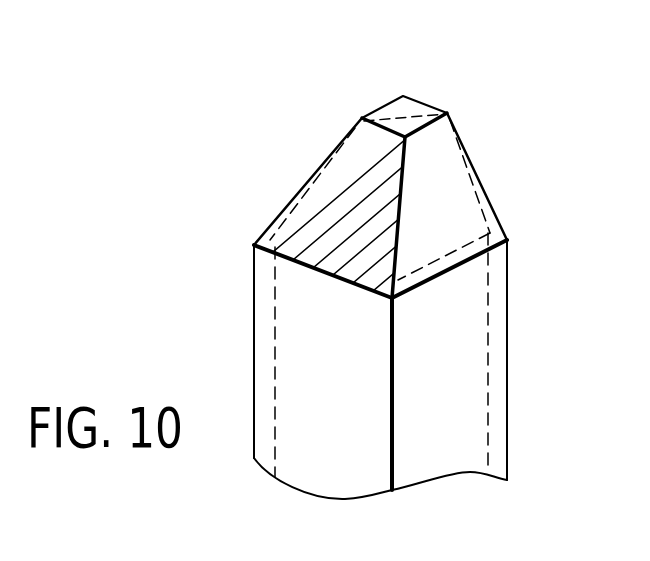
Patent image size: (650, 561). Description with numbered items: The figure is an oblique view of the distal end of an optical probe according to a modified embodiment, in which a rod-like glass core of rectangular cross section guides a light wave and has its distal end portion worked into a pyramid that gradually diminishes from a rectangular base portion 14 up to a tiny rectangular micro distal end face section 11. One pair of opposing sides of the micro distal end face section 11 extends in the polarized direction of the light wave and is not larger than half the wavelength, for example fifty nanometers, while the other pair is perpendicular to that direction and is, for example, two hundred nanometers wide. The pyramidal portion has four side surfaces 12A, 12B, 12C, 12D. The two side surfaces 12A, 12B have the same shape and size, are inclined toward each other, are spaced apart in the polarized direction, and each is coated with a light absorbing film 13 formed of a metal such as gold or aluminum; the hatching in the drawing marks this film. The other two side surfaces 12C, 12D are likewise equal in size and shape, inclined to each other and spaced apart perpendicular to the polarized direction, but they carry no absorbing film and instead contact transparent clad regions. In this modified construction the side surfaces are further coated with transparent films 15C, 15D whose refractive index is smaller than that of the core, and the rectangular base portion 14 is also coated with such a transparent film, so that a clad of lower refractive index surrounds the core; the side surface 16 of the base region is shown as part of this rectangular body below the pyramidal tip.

The micro distal end face section 11 is at (410, 109).
The side surface 12A is at (322, 186).
The side surface 12B is at (462, 141).
The side surface 12C is at (331, 156).
The side surface 12D is at (460, 183).
The light absorbing film 13 is at (360, 250).
The rectangular base portion 14 is at (458, 384).
The transparent film 15C is at (257, 243).
The transparent film 15D is at (505, 233).
The side surface 16 is at (260, 342).